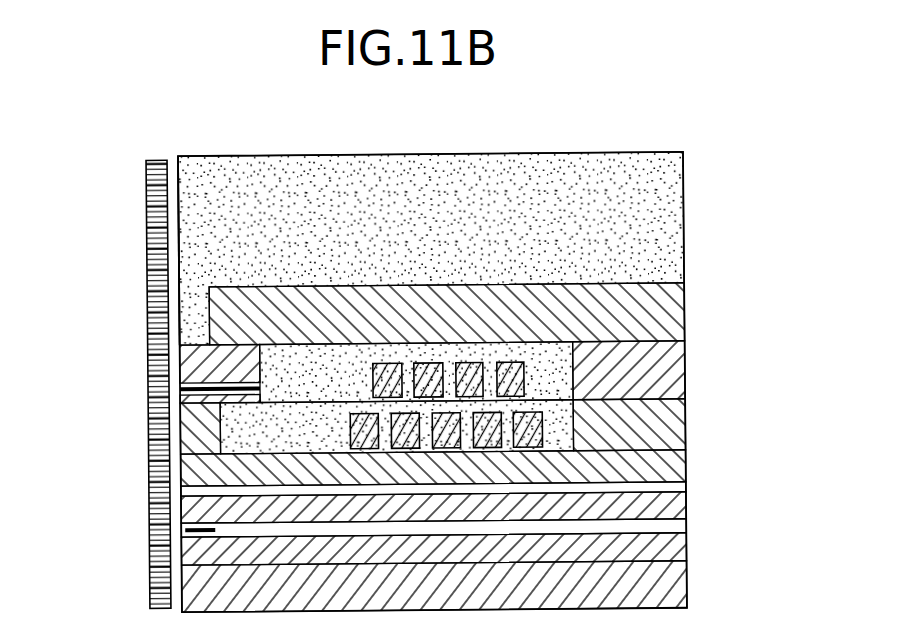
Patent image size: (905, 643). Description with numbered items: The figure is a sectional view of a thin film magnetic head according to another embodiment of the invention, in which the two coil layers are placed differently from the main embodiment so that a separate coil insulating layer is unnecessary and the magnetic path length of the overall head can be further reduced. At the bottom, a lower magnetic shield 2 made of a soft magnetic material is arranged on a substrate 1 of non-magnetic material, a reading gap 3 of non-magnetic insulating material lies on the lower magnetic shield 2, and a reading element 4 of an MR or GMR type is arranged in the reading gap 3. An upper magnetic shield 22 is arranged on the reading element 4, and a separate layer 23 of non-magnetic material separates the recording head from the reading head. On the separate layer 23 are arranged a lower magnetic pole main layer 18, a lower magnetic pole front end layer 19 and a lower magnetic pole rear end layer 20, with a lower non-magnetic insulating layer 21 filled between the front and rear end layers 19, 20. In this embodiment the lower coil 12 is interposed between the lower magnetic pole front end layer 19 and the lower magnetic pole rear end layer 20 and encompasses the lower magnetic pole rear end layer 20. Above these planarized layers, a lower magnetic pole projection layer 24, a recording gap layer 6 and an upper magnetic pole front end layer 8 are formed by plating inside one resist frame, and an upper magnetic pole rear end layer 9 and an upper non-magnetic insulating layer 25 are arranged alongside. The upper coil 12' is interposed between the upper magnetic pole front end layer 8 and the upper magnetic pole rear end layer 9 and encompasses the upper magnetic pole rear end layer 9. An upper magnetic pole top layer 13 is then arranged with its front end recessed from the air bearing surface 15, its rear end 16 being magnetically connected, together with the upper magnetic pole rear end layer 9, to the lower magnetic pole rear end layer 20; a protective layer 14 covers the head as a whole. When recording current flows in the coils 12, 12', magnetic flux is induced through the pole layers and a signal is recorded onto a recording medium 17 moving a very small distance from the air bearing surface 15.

The substrate 1 is at (665, 583).
The lower magnetic shield 2 is at (665, 550).
The reading gap 3 is at (665, 527).
The reading element 4 is at (184, 530).
The recording gap layer 6 is at (198, 390).
The upper magnetic pole front end layer 8 is at (198, 370).
The upper magnetic pole rear end layer 9 is at (663, 362).
The lower coil 12 is at (506, 282).
The upper coil 12' is at (479, 247).
The upper magnetic pole top layer 13 is at (561, 313).
The protective layer 14 is at (272, 193).
The air bearing surface 15 is at (180, 258).
The rear end of the upper magnetic pole top layer 16 is at (663, 310).
The recording medium 17 is at (148, 200).
The lower magnetic pole main layer 18 is at (667, 465).
The lower magnetic pole front end layer 19 is at (190, 426).
The lower magnetic pole rear end layer 20 is at (663, 428).
The lower non-magnetic insulating layer 21 is at (283, 428).
The upper magnetic shield 22 is at (665, 507).
The separate layer 23 is at (668, 488).
The lower magnetic pole projection layer 24 is at (188, 398).
The upper non-magnetic insulating layer 25 is at (553, 392).